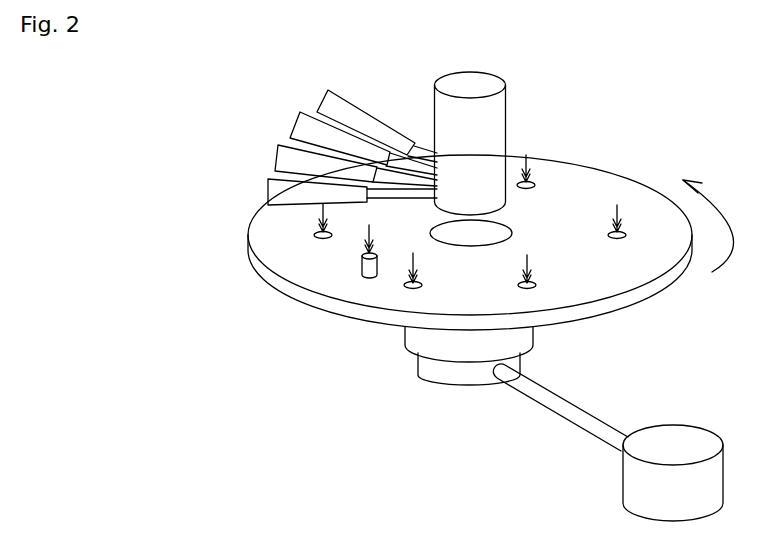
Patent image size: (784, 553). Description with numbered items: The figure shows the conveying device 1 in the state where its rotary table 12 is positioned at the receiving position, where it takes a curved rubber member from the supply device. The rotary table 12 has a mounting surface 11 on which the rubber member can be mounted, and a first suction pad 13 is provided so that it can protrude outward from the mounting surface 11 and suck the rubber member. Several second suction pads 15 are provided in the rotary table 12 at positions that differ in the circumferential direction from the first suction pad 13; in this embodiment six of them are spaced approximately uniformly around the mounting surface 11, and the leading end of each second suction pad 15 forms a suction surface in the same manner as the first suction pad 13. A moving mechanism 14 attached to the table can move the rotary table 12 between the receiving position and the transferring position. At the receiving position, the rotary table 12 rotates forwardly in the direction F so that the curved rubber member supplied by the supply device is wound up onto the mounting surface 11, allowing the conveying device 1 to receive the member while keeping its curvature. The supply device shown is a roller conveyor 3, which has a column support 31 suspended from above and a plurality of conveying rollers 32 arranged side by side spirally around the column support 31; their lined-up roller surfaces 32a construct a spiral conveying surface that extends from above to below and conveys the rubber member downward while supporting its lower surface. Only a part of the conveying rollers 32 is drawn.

The conveying device 1 is at (383, 403).
The mounting surface 11 is at (328, 273).
The rotary table 12 is at (318, 297).
The first suction pad 13 is at (358, 264).
The moving mechanism 14 is at (577, 388).
The second suction pad 15 is at (312, 228).
The roller conveyor 3 is at (515, 105).
The column support 31 is at (507, 150).
The conveying rollers 32 is at (326, 128).
The roller surfaces 32a is at (280, 148).
The direction of forward rotation F is at (714, 226).